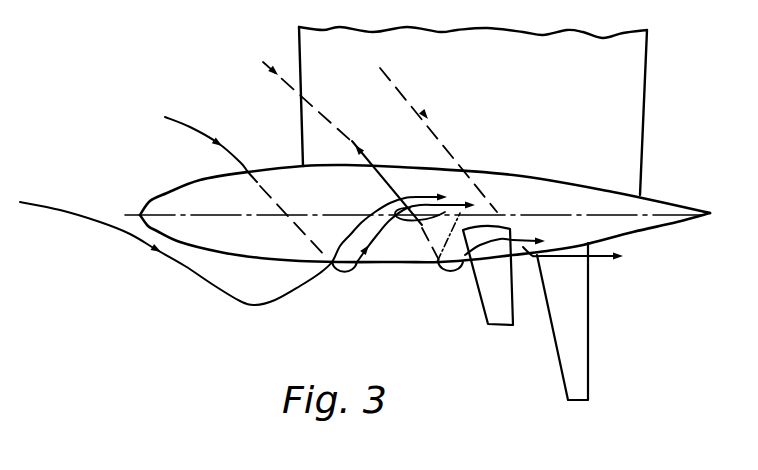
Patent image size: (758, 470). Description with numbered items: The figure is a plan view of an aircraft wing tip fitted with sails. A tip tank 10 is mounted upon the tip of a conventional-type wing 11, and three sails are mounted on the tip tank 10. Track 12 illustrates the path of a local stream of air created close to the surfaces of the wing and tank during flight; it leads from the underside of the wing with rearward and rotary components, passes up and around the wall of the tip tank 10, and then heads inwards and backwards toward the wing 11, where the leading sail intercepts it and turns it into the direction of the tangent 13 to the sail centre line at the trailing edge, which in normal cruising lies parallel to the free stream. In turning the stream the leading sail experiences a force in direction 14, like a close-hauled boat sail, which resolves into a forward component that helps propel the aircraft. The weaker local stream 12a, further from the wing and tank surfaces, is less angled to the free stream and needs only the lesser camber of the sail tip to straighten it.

The tip tank 10 is at (277, 264).
The wing 11 is at (540, 85).
The track 12 is at (188, 125).
The weaker local stream 12a is at (100, 224).
The tangent 13 is at (439, 264).
The direction of force 14 is at (372, 163).